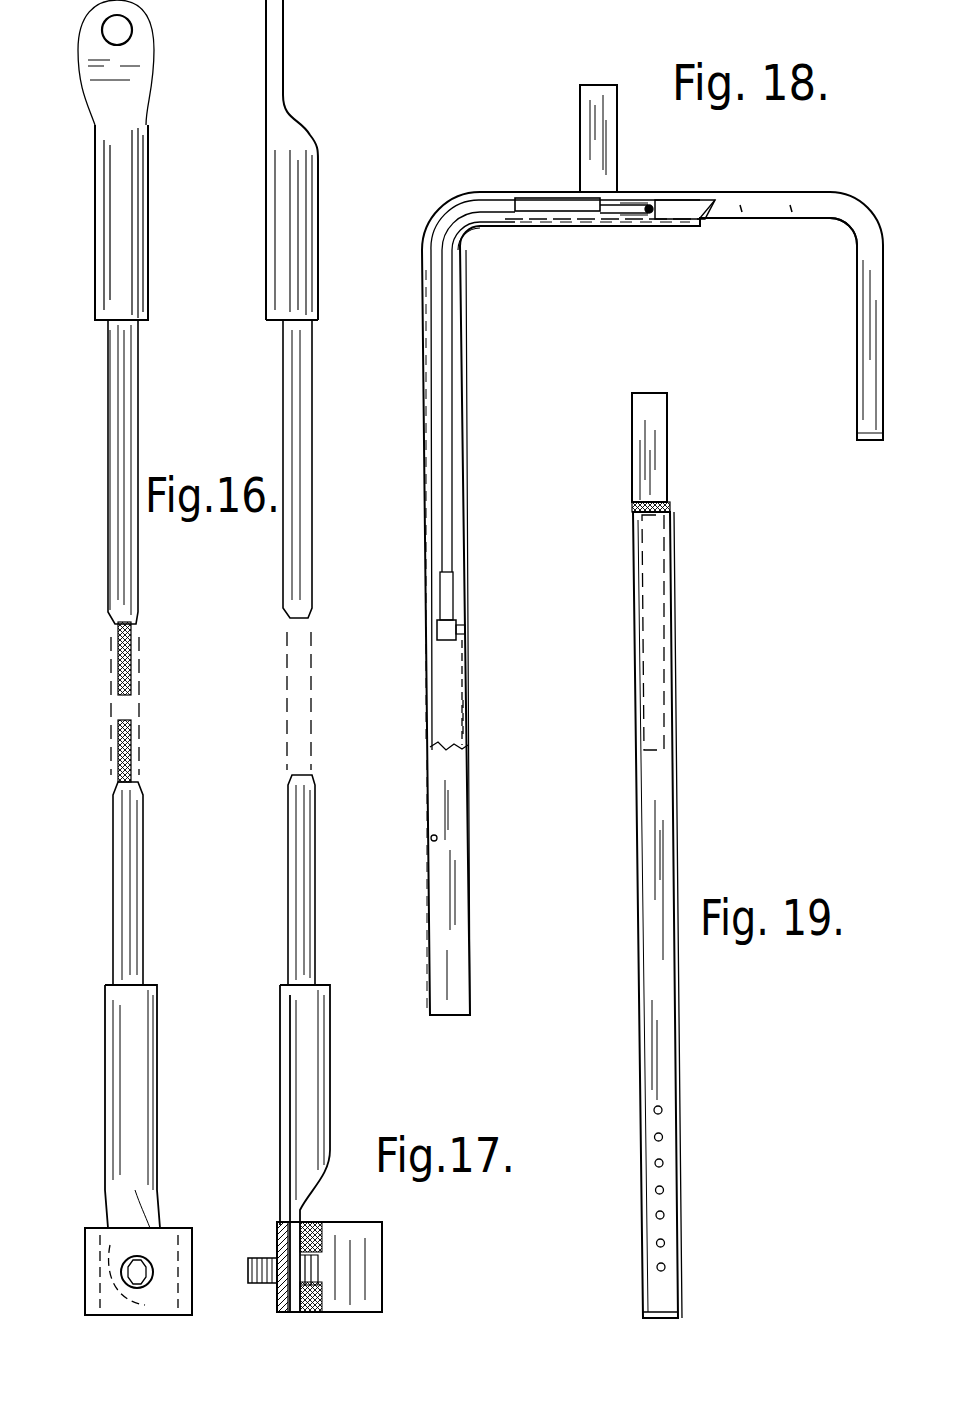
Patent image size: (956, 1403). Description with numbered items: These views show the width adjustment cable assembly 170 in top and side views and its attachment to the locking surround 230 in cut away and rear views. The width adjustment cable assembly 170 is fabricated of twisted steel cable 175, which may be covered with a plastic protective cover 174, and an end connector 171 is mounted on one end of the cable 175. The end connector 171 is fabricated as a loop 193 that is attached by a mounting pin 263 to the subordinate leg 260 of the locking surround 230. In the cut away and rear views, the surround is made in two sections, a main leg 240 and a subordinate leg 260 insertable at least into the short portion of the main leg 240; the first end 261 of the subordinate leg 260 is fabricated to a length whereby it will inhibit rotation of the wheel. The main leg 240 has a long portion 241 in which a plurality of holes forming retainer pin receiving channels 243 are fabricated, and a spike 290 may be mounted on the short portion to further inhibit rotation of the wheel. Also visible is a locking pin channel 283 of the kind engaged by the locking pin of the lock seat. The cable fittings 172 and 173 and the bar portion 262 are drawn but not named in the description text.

In FIG. 16, the width adjustment cable assembly 170 is at (100, 425).
In FIG. 17, the width adjustment cable assembly 170 is at (286, 905).
In FIG. 16, the end connector 171 is at (145, 198).
In FIG. 17, the end connector 171 is at (292, 160).
In FIG. 18, the end connector 171 is at (512, 200).
In FIG. 16, the sleeve 172 is at (172, 1232).
In FIG. 17, the sleeve 172 is at (288, 1057).
In FIG. 18, the sleeve 172 is at (448, 602).
In FIG. 16, the mounting block 173 is at (128, 1262).
In FIG. 17, the mounting block 173 is at (258, 1260).
In FIG. 18, the mounting block 173 is at (467, 630).
In FIG. 16, the plastic protective cover 174 is at (108, 575).
In FIG. 16, the twisted steel cable 175 is at (120, 668).
In FIG. 16, the loop 193 is at (100, 36).
In FIG. 18, the locking surround 230 is at (466, 437).
In FIG. 19, the locking surround 230 is at (636, 881).
In FIG. 18, the main leg 240 is at (467, 548).
In FIG. 19, the main leg 240 is at (678, 1075).
In FIG. 18, the long portion 241 is at (659, 197).
In FIG. 19, the long portion 241 is at (668, 525).
In FIG. 18, the retainer pin receiving channels 243 is at (467, 737).
In FIG. 18, the subordinate leg 260 is at (828, 226).
In FIG. 18, the first end 261 is at (856, 365).
In FIG. 18, the top bar 262 is at (770, 192).
In FIG. 18, the mounting pin 263 is at (642, 218).
In FIG. 18, the locking pin channel 283 is at (432, 935).
In FIG. 19, the locking pin channel 283 is at (665, 1265).
In FIG. 18, the spike 290 is at (583, 142).
In FIG. 19, the spike 290 is at (664, 447).